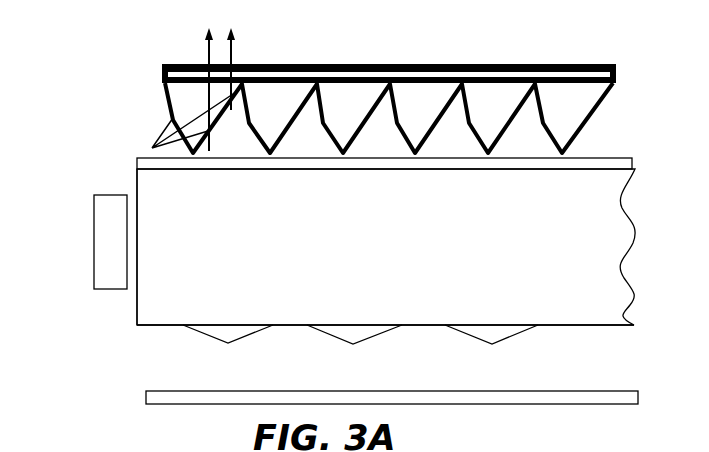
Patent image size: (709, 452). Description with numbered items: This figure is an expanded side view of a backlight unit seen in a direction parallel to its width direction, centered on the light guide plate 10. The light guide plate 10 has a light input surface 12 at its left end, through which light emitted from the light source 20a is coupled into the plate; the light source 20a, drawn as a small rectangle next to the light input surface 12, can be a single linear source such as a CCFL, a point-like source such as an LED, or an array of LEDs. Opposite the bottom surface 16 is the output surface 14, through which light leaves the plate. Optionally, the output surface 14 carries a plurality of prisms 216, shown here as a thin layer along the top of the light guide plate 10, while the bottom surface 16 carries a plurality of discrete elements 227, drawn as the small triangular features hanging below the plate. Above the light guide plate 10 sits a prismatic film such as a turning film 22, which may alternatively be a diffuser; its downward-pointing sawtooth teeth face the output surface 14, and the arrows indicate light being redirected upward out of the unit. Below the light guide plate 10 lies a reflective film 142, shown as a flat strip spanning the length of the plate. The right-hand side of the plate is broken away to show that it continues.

The light guide plate 10 is at (310, 263).
The light input surface 12 is at (138, 187).
The output surface 14 is at (390, 267).
The bottom surface 16 is at (563, 325).
The light source 20a is at (103, 278).
The turning film 22 is at (565, 95).
The reflective film 142 is at (418, 392).
The prisms 216 is at (596, 163).
The discrete elements 227 is at (492, 330).